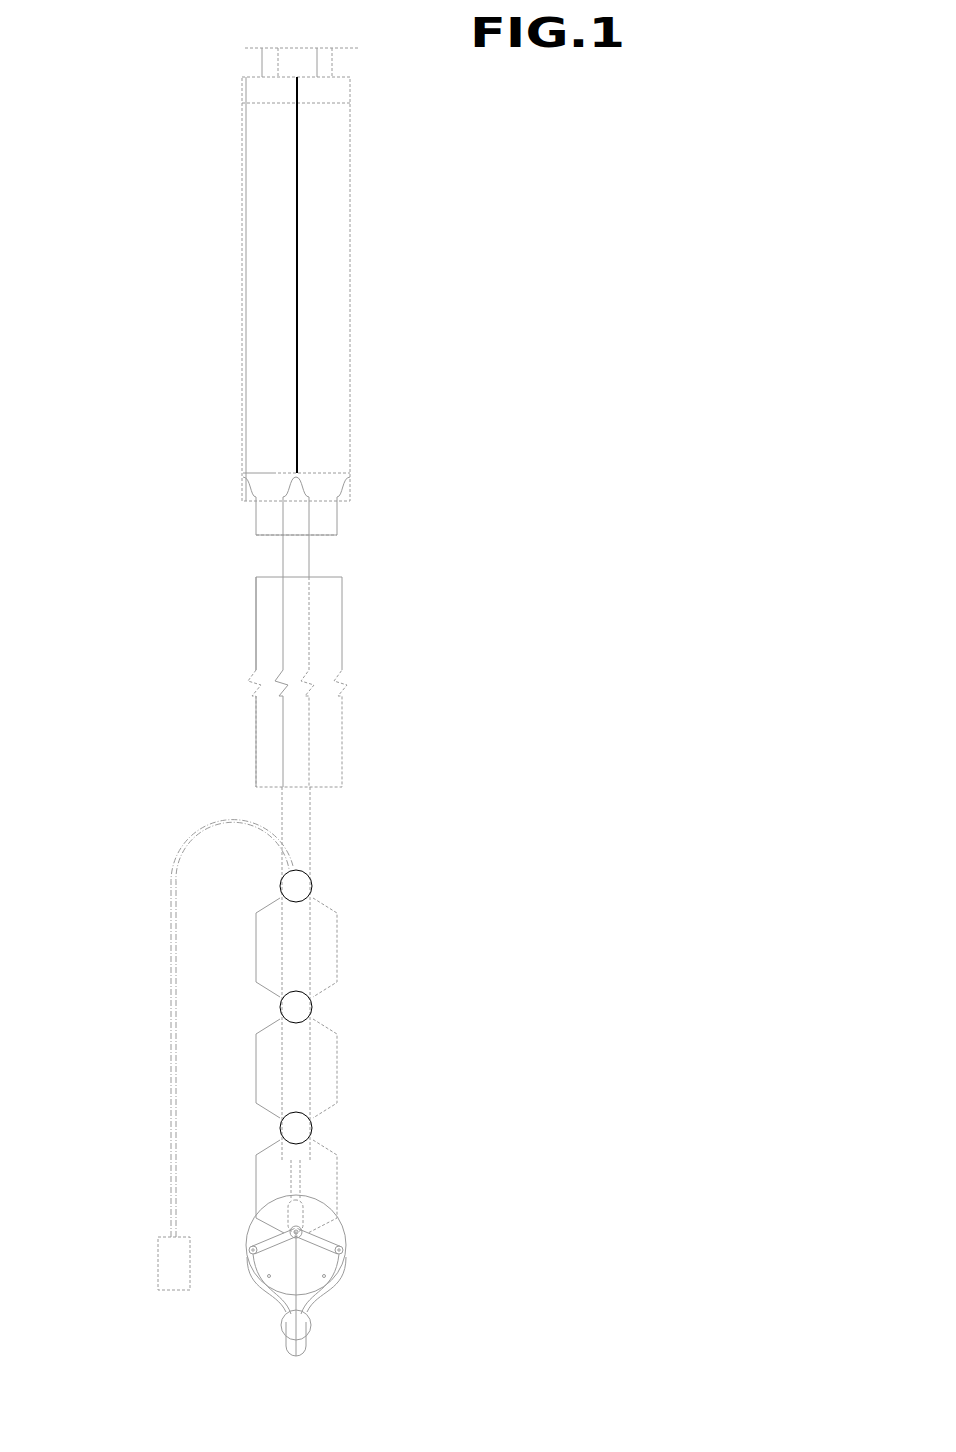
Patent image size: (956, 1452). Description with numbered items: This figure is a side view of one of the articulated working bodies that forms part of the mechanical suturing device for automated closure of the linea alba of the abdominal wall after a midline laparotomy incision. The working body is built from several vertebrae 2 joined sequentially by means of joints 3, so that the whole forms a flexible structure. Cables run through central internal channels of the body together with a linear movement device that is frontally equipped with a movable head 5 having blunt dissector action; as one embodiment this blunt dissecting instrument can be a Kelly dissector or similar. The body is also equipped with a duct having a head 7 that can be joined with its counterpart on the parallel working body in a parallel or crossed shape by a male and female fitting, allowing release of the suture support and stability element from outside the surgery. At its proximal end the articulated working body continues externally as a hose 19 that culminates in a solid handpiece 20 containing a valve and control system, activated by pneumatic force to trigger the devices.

The handpiece 20 is at (332, 239).
The hose 19 is at (293, 817).
The vertebra 2 is at (325, 1062).
The joint 3 is at (297, 1128).
The movable head 5 is at (332, 1232).
The duct head 7 is at (169, 1261).